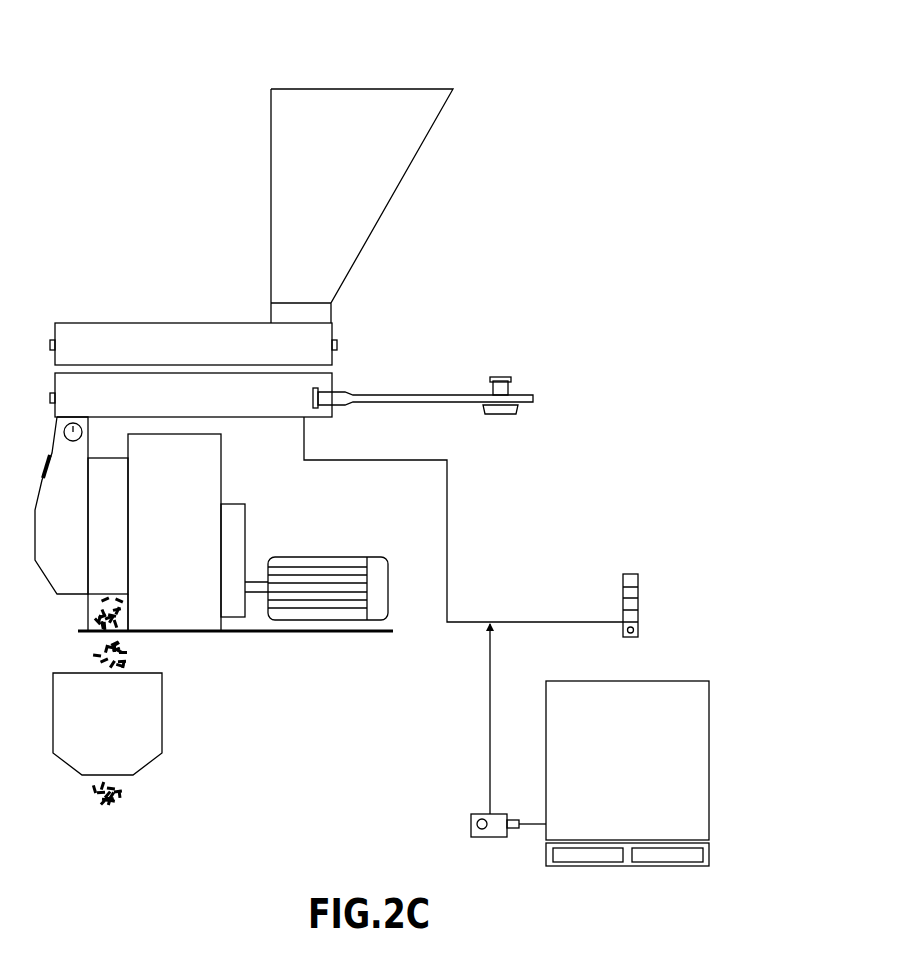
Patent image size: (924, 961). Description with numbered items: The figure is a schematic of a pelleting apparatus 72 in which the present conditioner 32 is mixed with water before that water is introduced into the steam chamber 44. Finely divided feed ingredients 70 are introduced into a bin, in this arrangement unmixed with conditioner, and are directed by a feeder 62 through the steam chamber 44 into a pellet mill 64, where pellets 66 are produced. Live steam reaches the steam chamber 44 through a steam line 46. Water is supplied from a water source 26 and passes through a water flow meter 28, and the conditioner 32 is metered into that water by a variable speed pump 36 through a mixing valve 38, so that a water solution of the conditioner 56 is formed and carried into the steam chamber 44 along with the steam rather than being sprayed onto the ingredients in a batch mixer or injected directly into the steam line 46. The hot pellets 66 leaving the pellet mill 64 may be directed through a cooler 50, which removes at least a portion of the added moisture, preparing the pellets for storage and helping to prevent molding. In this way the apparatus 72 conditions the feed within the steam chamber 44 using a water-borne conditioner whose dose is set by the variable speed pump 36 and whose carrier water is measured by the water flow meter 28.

The ingredients 70 is at (357, 86).
The pelleting apparatus 72 is at (563, 105).
The water solution of the conditioner 56 is at (438, 138).
The feeder 62 is at (238, 357).
The steam chamber 44 is at (286, 407).
The steam line 46 is at (541, 398).
The pellet mill 64 is at (226, 487).
The pellets 66 is at (138, 653).
The cooler 50 is at (119, 745).
The mixing valve 38 is at (482, 633).
The water flow meter 28 is at (631, 572).
The water source 26 is at (659, 622).
The variable speed pump 36 is at (469, 826).
The conditioner 32 is at (641, 802).